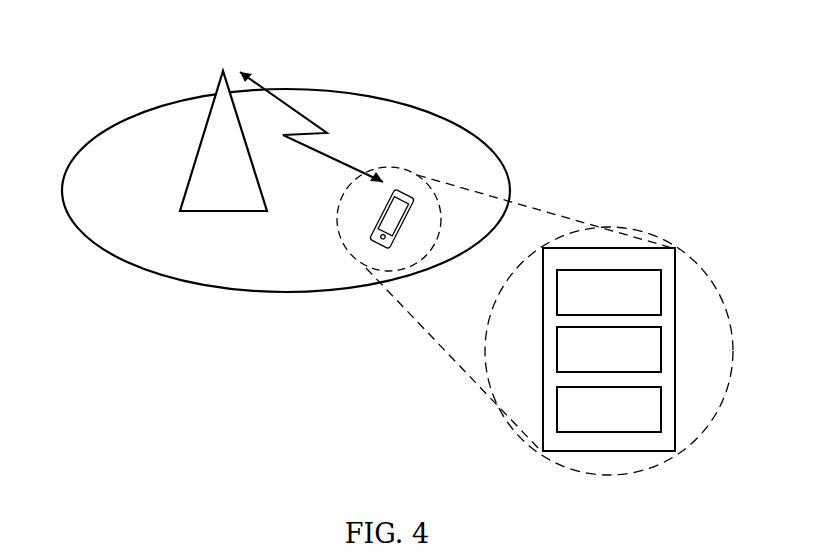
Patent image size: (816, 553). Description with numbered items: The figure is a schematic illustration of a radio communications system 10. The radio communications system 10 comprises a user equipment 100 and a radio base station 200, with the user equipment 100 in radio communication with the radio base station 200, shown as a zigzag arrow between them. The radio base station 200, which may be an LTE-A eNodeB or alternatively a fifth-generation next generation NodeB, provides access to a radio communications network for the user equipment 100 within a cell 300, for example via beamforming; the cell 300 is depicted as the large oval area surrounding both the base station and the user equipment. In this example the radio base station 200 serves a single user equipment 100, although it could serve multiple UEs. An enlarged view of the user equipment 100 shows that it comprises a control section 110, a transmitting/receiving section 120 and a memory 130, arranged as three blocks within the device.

The radio communications system 10 is at (328, 78).
The user equipment 100 is at (368, 228).
The control section 110 is at (609, 349).
The transmitting/receiving section 120 is at (609, 292).
The memory 130 is at (609, 409).
The radio base station 200 is at (197, 157).
The cell 300 is at (460, 129).